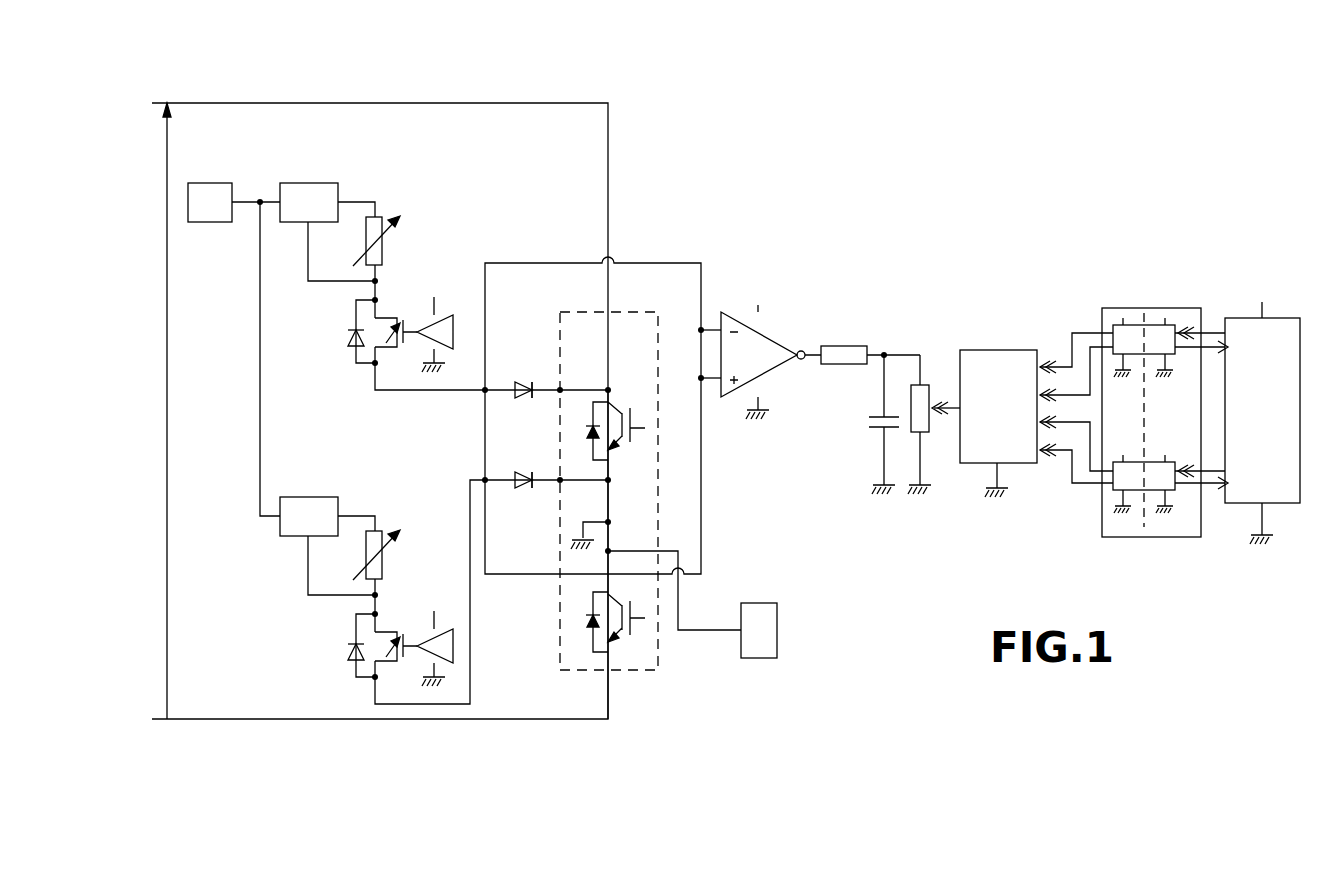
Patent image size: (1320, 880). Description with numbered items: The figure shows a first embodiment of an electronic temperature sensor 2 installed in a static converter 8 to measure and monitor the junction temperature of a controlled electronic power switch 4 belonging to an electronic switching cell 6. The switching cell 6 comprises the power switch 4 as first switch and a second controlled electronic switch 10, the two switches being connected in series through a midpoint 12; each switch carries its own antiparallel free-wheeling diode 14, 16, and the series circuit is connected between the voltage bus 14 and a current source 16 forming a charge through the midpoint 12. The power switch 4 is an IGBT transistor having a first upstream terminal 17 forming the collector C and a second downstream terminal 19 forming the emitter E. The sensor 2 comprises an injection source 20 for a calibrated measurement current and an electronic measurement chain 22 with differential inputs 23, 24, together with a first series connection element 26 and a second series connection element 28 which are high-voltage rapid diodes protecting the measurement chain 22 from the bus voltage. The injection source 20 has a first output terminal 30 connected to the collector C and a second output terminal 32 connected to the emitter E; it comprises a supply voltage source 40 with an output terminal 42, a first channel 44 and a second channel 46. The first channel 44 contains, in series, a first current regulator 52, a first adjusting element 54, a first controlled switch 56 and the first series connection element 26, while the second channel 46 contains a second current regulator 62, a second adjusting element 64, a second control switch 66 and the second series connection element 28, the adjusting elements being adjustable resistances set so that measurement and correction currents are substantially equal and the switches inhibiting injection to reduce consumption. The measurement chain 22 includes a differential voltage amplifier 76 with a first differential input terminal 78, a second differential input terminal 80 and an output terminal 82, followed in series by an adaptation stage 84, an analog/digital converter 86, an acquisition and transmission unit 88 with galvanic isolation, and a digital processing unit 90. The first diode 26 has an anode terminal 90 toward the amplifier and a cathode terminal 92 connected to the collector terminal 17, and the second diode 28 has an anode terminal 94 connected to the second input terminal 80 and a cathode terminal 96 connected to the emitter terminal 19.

The electronic temperature sensor 2 is at (465, 82).
The controlled electronic power switch 4 is at (645, 405).
The electronic switching cell 6 is at (666, 623).
The static converter 8 is at (580, 735).
The second controlled electronic switch 10 is at (645, 635).
The midpoint 12 is at (608, 551).
The free-wheeling diode / voltage source (DC bus) 14 is at (150, 480).
The free-wheeling diode / current source 16 is at (587, 622).
The first upstream terminal 17 is at (610, 388).
The second downstream terminal 19 is at (614, 480).
The injection source 20 is at (336, 261).
The electronic measurement chain 22 is at (883, 397).
The first differential input 23 is at (468, 385).
The second differential input 24 is at (486, 478).
The first series connection element 26 is at (522, 397).
The second series connection element 28 is at (530, 478).
The first output terminal 30 is at (562, 388).
The second output terminal 32 is at (562, 481).
The supply voltage source 40 is at (208, 215).
The output terminal 42 is at (233, 200).
The first channel 44 is at (330, 338).
The second channel 46 is at (362, 453).
The first current regulator 52 is at (316, 190).
The first adjusting element 54 is at (378, 248).
The first controlled switch 56 is at (388, 312).
The second current regulator 62 is at (310, 506).
The second adjusting element 64 is at (380, 540).
The second control switch 66 is at (388, 628).
The differential voltage amplifier 76 is at (820, 365).
The first differential input terminal 78 is at (700, 330).
The second differential input terminal 80 is at (700, 380).
The output terminal 82 is at (803, 351).
The adaptation stage 84 is at (840, 466).
The analog/digital converter 86 is at (982, 355).
The acquisition and transmission unit 88 is at (1150, 540).
The digital processing unit / first terminal 90 is at (515, 385).
The second terminal 92 is at (540, 385).
The third terminal 94 is at (513, 485).
The fourth terminal 96 is at (533, 485).